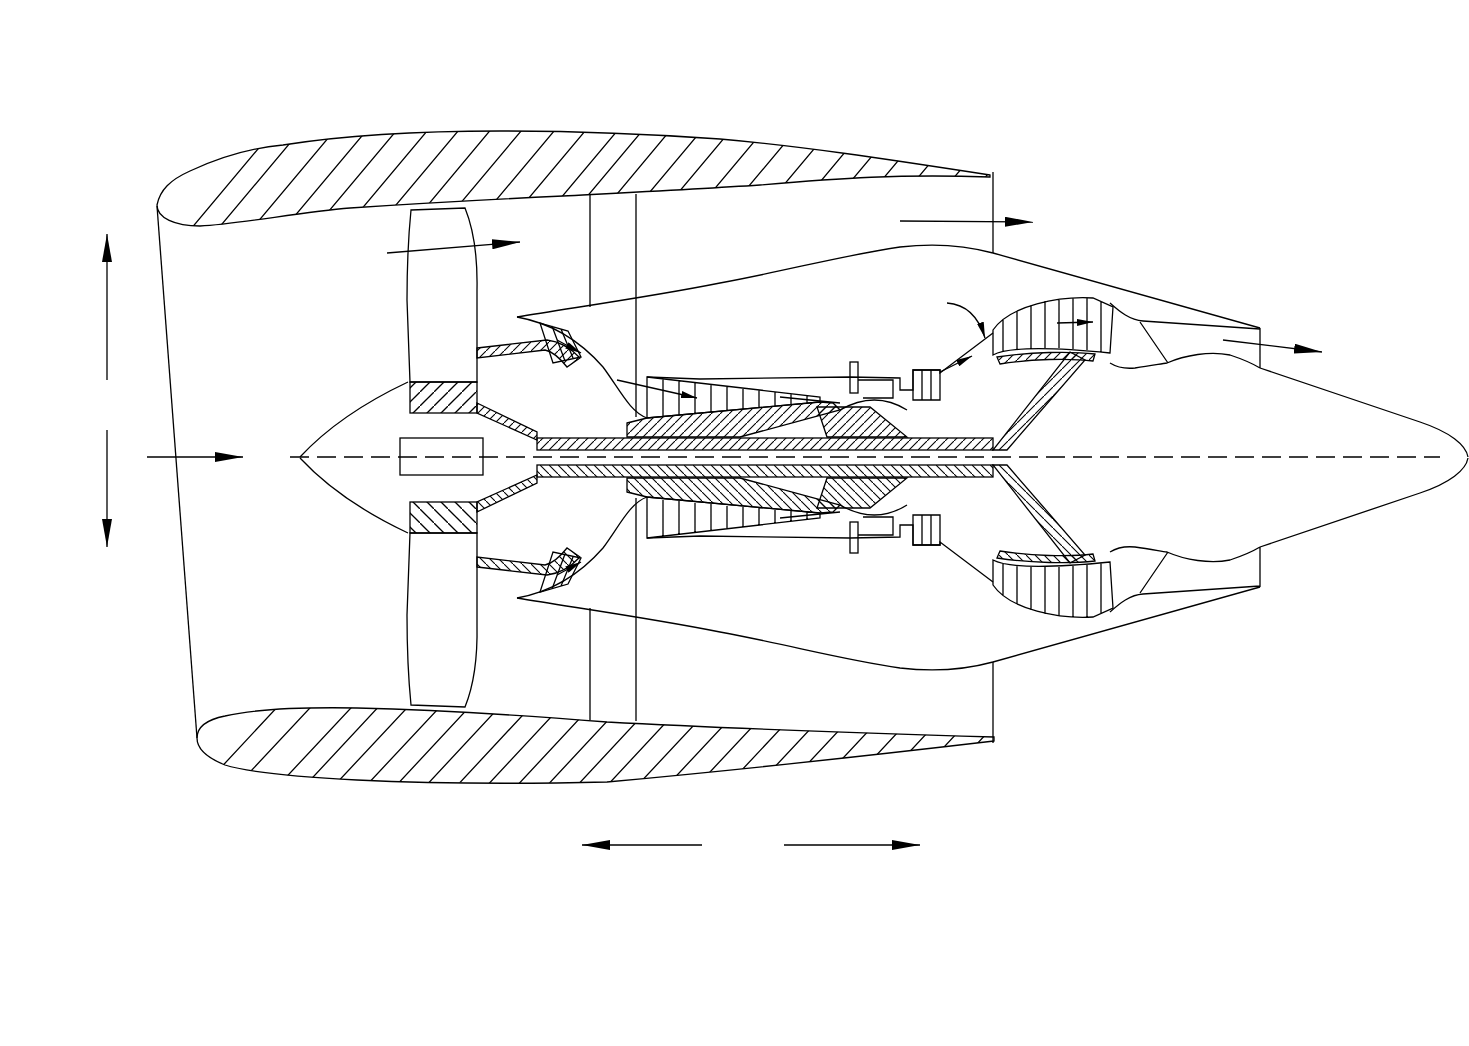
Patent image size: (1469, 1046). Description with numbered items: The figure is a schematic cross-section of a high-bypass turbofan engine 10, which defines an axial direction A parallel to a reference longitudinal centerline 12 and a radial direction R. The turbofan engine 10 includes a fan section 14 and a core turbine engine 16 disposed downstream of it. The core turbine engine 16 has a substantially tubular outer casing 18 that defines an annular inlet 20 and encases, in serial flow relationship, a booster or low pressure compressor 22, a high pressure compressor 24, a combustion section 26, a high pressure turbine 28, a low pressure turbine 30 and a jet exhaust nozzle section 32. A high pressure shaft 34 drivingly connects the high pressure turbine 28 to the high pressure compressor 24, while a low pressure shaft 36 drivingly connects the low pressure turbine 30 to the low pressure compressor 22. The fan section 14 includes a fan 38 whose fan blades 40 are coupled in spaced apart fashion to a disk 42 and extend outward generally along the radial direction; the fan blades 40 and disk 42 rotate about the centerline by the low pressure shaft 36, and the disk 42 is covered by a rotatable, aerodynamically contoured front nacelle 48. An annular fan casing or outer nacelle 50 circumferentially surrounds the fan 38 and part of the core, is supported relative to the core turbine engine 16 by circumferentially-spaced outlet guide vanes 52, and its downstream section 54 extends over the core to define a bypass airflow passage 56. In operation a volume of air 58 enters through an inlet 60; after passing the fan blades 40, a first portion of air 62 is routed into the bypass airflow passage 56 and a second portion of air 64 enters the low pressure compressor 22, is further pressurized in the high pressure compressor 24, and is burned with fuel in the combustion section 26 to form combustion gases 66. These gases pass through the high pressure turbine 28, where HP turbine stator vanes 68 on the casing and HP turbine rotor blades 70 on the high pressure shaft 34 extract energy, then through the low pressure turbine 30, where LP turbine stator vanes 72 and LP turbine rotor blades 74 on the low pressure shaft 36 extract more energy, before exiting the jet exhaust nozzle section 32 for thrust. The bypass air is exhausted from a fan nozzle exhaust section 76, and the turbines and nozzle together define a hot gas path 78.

The turbofan engine 10 is at (1245, 205).
The longitudinal centerline 12 is at (1173, 456).
The fan section 14 is at (492, 116).
The core turbine engine 16 is at (808, 328).
The outer casing 18 is at (837, 652).
The annular inlet 20 is at (530, 585).
The low pressure compressor 22 is at (590, 555).
The high pressure compressor 24 is at (670, 540).
The combustion section 26 is at (866, 545).
The high pressure turbine 28 is at (957, 562).
The low pressure turbine 30 is at (1093, 625).
The jet exhaust nozzle section 32 is at (1262, 332).
The high pressure shaft 34 is at (915, 400).
The low pressure shaft 36 is at (593, 440).
The fan 38 is at (393, 297).
The fan blades 40 is at (407, 650).
The disk 42 is at (407, 393).
The front nacelle 48 is at (330, 432).
The outer nacelle 50 is at (478, 786).
The outlet guide vanes 52 is at (637, 217).
The downstream section 54 is at (800, 143).
The bypass airflow passage 56 is at (793, 241).
The volume of air 58 is at (193, 443).
The inlet 60 is at (195, 698).
The first portion of air 62 is at (423, 247).
The second portion of air 64 is at (500, 330).
The combustion gases 66 is at (1038, 313).
The HP turbine stator vanes 68 is at (910, 553).
The HP turbine rotor blades 70 is at (923, 555).
The LP turbine stator vanes 72 is at (1000, 587).
The LP turbine rotor blades 74 is at (1013, 587).
The fan nozzle exhaust section 76 is at (997, 200).
The hot gas path 78 is at (943, 311).